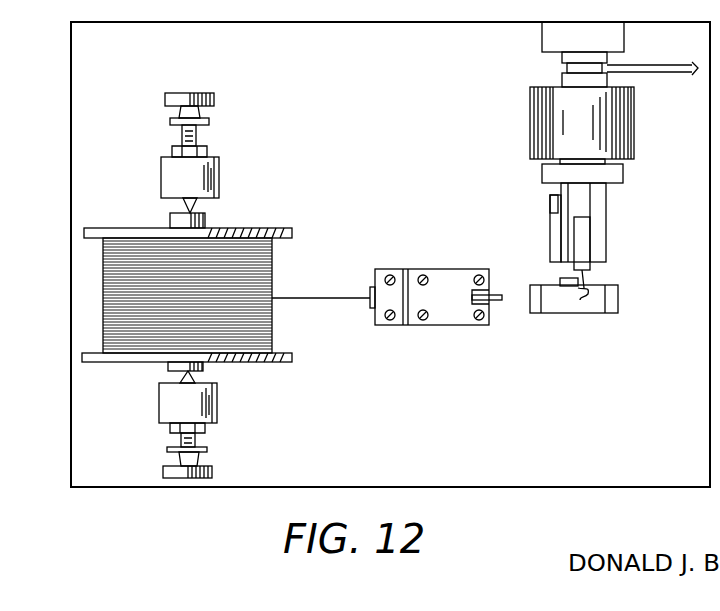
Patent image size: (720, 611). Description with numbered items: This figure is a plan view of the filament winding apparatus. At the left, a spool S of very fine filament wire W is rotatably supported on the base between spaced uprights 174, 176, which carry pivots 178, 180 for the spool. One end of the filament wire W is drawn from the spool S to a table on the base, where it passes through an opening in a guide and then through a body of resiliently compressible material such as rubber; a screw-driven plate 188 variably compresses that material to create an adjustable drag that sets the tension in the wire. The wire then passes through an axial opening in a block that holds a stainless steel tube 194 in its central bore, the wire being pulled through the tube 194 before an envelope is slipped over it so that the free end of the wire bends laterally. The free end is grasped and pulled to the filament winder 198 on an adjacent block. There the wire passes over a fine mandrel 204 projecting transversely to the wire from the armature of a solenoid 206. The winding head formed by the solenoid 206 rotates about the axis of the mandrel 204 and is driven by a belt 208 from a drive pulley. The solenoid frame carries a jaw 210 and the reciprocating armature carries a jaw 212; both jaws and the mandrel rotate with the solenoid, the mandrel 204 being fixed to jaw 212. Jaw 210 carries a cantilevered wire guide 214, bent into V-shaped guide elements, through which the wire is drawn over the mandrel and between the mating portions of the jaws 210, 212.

The spool S is at (100, 295).
The filament wire W is at (310, 298).
The upright 174 is at (217, 402).
The upright 176 is at (217, 175).
The pivot 178 is at (180, 204).
The pivot 180 is at (180, 372).
The screw-driven plate 188 is at (381, 269).
The stainless steel tube 194 is at (498, 295).
The filament winder 198 is at (514, 128).
The mandrel 204 is at (582, 294).
The solenoid 206 is at (600, 197).
The belt 208 is at (665, 64).
The jaw 210 is at (551, 206).
The jaw 212 is at (580, 222).
The wire guide 214 is at (585, 292).